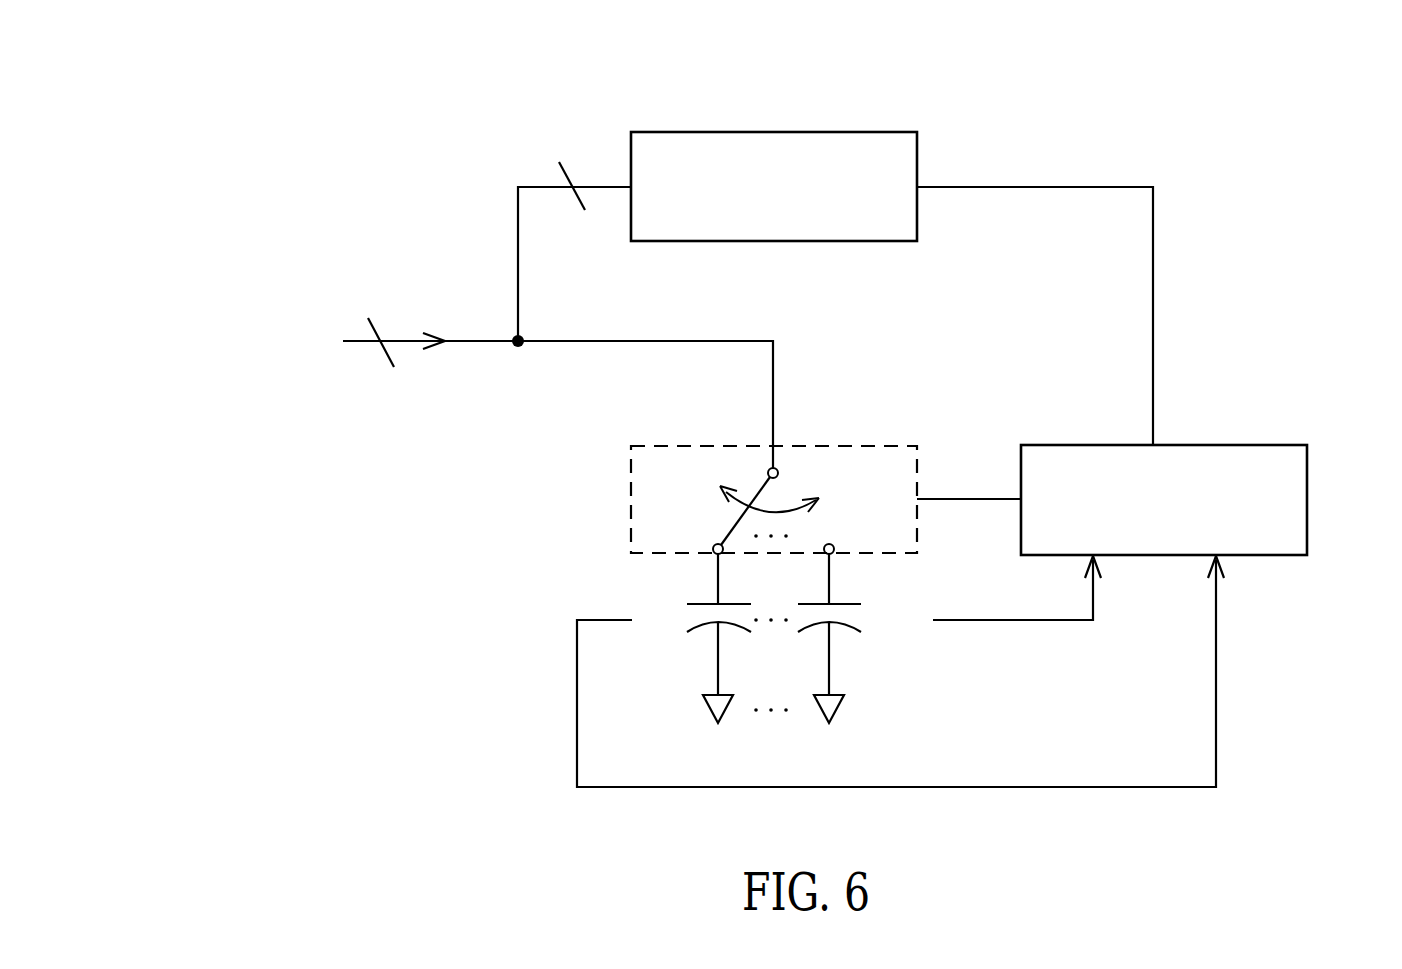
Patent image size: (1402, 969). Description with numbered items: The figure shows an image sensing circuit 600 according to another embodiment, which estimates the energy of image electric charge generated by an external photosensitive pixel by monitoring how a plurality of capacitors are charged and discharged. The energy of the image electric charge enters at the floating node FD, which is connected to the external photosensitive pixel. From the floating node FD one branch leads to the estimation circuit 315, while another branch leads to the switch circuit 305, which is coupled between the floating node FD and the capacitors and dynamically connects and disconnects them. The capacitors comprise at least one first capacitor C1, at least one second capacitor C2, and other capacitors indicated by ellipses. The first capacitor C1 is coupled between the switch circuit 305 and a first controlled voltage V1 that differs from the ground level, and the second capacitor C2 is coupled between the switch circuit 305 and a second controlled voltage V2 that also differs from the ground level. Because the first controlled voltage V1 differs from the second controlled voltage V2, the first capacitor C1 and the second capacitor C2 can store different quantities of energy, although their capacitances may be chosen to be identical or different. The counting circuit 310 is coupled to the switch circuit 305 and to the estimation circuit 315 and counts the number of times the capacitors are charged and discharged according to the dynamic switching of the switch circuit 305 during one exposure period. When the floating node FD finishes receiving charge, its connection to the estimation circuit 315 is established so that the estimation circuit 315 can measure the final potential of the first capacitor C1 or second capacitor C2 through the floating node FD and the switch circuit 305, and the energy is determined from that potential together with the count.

The image sensing circuit 600 is at (1223, 98).
The estimation circuit 315 is at (893, 132).
The switch circuit 305 is at (883, 446).
The counting circuit 310 is at (1283, 445).
The floating node FD is at (522, 337).
The first capacitor C1 is at (695, 624).
The second capacitor C2 is at (858, 624).
The first controlled voltage V1 is at (717, 728).
The second controlled voltage V2 is at (828, 728).